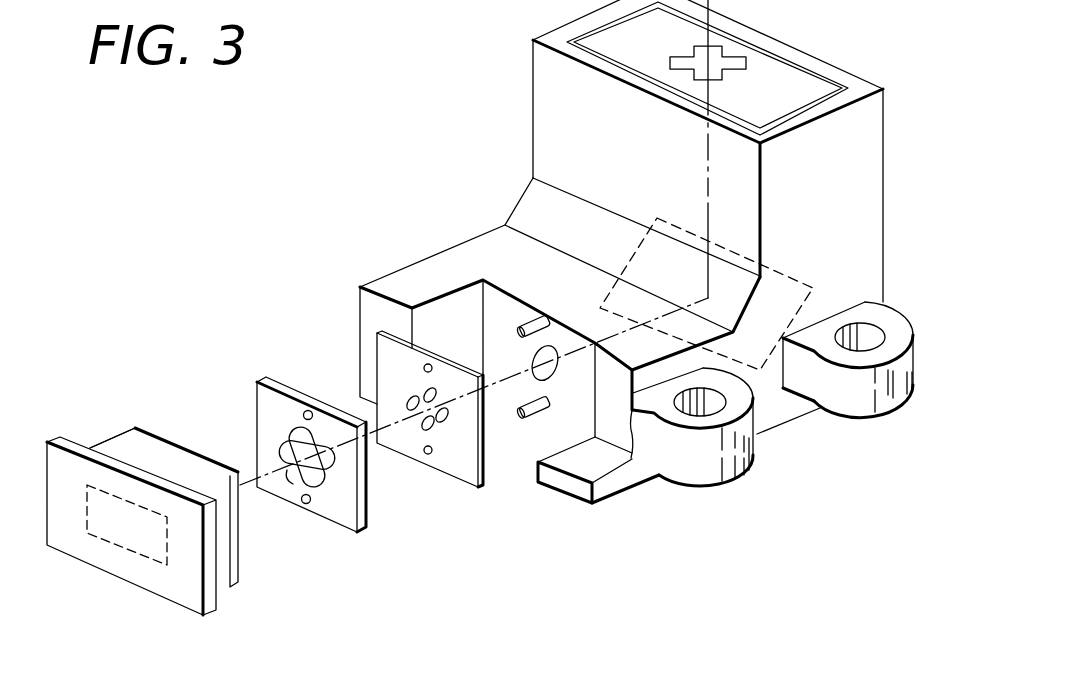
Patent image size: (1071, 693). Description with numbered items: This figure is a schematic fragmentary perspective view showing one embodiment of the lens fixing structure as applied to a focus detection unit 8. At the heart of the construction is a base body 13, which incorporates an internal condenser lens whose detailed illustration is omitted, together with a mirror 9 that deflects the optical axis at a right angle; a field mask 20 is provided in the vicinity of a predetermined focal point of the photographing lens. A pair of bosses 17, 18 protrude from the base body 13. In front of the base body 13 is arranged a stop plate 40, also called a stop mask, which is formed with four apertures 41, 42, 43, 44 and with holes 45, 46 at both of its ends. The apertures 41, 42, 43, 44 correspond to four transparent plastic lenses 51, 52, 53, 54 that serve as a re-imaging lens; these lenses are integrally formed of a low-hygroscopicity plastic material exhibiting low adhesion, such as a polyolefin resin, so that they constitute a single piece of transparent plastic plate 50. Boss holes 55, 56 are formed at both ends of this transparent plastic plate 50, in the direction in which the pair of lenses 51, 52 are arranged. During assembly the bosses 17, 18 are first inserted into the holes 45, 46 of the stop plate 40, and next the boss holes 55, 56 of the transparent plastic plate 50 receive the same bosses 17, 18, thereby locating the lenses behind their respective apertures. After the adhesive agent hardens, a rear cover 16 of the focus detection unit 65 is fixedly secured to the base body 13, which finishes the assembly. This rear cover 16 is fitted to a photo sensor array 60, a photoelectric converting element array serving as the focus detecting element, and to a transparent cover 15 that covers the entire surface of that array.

The focus detection unit 8 is at (395, 125).
The mirror 9 is at (806, 280).
The base body 13 is at (772, 414).
The transparent cover 15 is at (167, 437).
The rear cover 16 is at (68, 440).
The boss 17 is at (525, 322).
The boss 18 is at (537, 418).
The field mask 20 is at (783, 80).
The stop plate 40 is at (485, 460).
The aperture 41 is at (410, 398).
The aperture 42 is at (424, 430).
The aperture 43 is at (428, 390).
The aperture 44 is at (444, 422).
The hole 45 is at (430, 366).
The hole 46 is at (429, 458).
The transparent plastic plate 50 is at (343, 512).
The transparent plastic lens 51 is at (296, 423).
The transparent plastic lens 52 is at (293, 480).
The transparent plastic lens 53 is at (294, 432).
The transparent plastic lens 54 is at (366, 506).
The boss hole 55 is at (308, 412).
The boss hole 56 is at (307, 506).
The photo sensor array 60 is at (122, 548).
The focus detection unit 65 is at (123, 440).